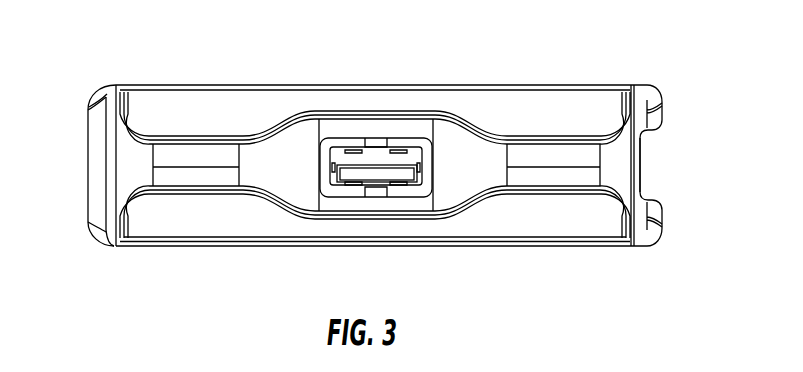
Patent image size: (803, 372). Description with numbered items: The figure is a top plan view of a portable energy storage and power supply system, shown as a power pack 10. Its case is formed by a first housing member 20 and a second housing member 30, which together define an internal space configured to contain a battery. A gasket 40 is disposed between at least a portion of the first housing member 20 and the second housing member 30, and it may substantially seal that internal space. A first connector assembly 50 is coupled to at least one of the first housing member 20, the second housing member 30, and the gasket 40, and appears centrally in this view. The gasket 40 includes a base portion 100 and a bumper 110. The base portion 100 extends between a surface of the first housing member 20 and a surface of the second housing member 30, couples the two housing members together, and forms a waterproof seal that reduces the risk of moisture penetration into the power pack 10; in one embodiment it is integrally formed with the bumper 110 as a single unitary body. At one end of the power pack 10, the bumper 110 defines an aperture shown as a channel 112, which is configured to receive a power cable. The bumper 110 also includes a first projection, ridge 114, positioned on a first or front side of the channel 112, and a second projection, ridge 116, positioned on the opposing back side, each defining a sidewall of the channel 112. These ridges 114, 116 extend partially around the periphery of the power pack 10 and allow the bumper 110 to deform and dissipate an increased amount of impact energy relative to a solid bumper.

The power pack 10 is at (670, 88).
The first housing member 20 is at (587, 217).
The second housing member 30 is at (542, 112).
The gasket 40 is at (91, 247).
The first connector assembly 50 is at (408, 197).
The base portion 100 is at (183, 172).
The bumper 110 is at (650, 250).
The channel 112 is at (648, 167).
The ridge 114 is at (660, 228).
The ridge 116 is at (658, 116).